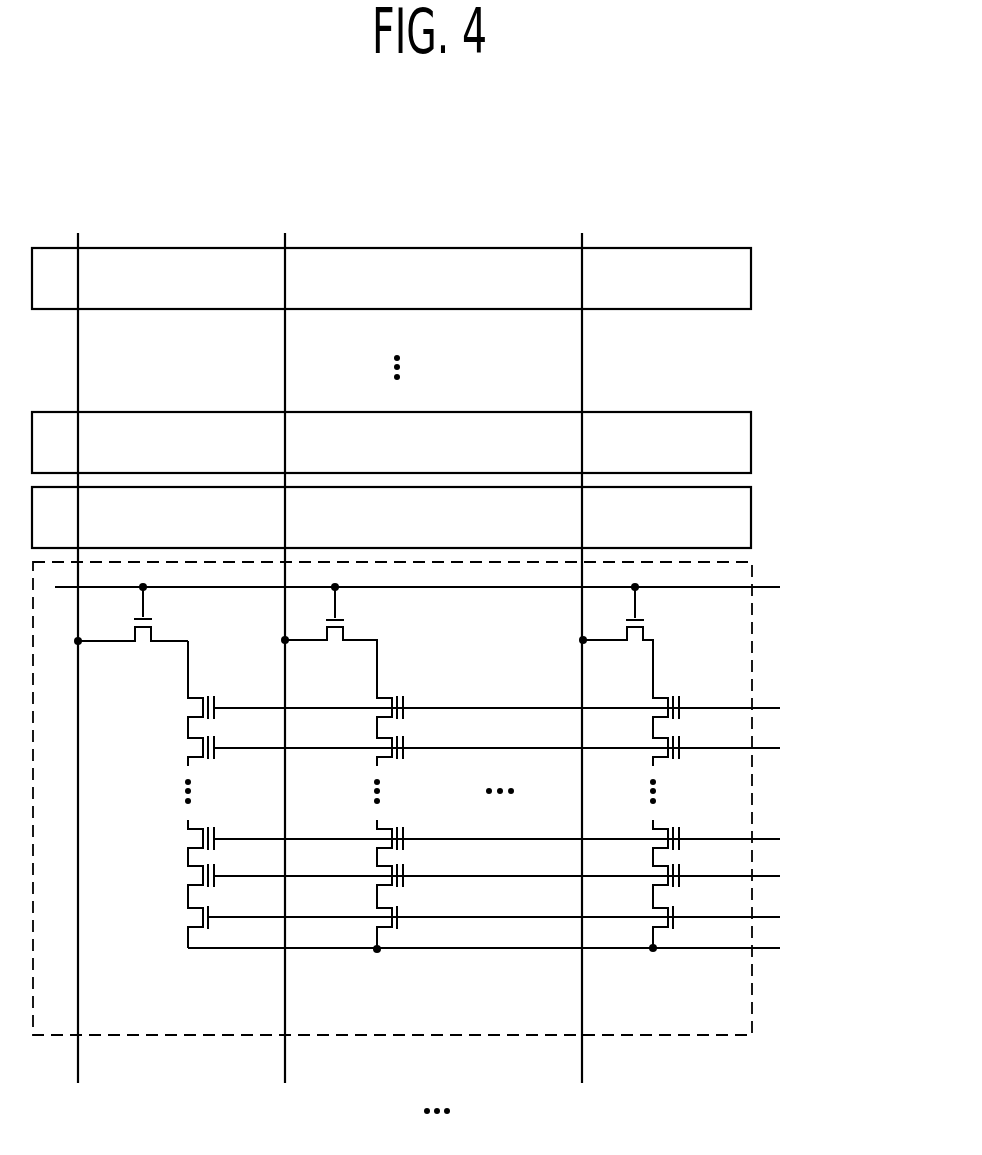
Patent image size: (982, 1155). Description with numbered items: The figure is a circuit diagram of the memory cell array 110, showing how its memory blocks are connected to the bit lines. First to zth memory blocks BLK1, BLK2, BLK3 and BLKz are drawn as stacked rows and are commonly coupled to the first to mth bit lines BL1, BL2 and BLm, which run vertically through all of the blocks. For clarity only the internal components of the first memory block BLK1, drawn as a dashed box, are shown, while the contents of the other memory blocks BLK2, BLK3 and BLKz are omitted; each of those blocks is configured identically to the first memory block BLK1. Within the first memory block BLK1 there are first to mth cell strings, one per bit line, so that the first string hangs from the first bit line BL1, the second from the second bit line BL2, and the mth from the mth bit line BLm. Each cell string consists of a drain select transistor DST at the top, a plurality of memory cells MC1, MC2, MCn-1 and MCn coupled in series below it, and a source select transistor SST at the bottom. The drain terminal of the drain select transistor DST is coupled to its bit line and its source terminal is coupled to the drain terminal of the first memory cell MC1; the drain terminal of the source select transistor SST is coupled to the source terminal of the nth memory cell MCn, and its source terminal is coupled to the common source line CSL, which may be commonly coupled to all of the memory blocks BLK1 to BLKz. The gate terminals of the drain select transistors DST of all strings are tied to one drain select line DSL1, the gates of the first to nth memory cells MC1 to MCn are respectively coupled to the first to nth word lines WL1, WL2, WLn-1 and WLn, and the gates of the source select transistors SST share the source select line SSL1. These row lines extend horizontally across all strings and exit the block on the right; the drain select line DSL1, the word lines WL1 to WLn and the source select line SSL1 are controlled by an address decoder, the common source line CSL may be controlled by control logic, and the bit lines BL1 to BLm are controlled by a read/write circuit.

The memory cell array 110 is at (771, 189).
The first bit line BL1 is at (77, 676).
The second bit line BL2 is at (285, 676).
The mth bit line BLm is at (583, 676).
The zth memory block BLKz is at (391, 278).
The third memory block BLK3 is at (391, 442).
The second memory block BLK2 is at (391, 517).
The first memory block BLK1 is at (752, 1000).
The drain select line DSL1 is at (441, 587).
The first word line WL1 is at (515, 707).
The second word line WL2 is at (516, 747).
The (n-1)th word line WLn-1 is at (527, 838).
The nth word line WLn is at (518, 876).
The source select line SSL1 is at (516, 918).
The common source line CSL is at (503, 949).
The drain select transistor DST is at (131, 628).
The first memory cell MC1 is at (181, 684).
The second memory cell MC2 is at (181, 746).
The (n-1)th memory cell MCn-1 is at (168, 838).
The nth memory cell MCn is at (178, 876).
The source select transistor SST is at (198, 957).